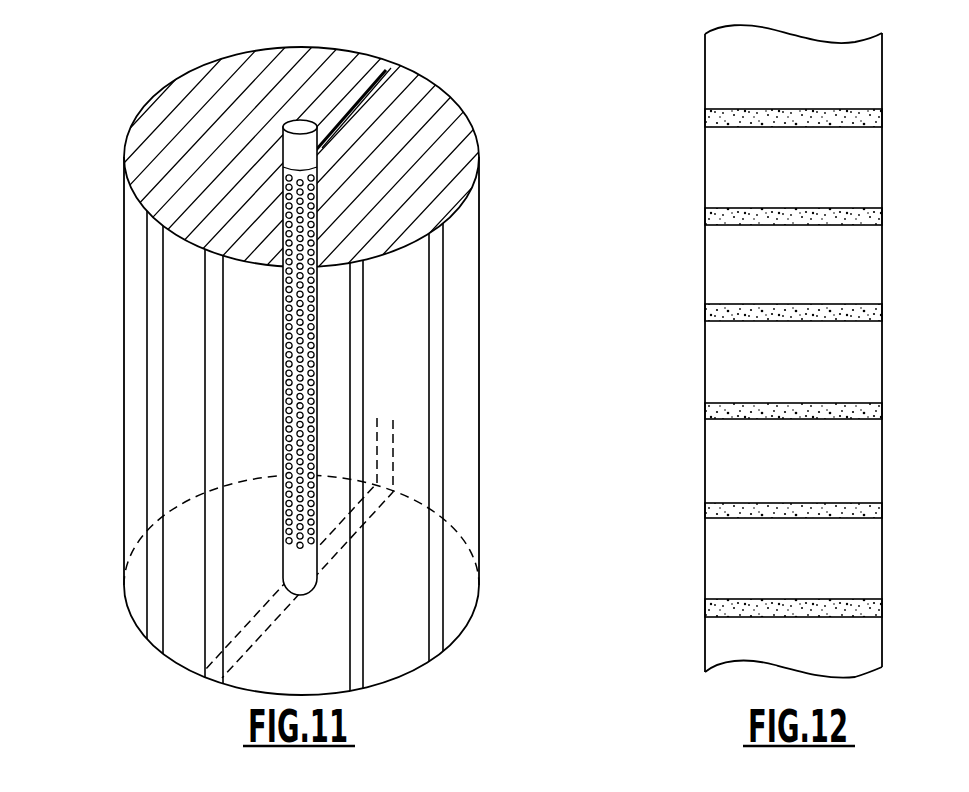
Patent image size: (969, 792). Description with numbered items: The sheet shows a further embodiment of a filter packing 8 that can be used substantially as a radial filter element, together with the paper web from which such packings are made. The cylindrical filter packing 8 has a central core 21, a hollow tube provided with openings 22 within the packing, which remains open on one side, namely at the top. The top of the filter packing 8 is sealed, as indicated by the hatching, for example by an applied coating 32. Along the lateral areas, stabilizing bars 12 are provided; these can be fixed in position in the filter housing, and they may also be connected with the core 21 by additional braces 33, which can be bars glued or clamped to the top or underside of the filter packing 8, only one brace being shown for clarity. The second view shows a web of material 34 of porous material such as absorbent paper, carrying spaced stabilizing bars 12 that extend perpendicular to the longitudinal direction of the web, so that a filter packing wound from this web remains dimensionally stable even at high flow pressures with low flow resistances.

In FIG. 11, the filter packing 8 is at (457, 342).
In FIG. 11, the stabilizing bars 12 is at (477, 380).
In FIG. 12, the stabilizing bars 12 is at (712, 213).
In FIG. 11, the central core 21 is at (282, 352).
In FIG. 11, the openings 22 is at (282, 457).
In FIG. 11, the applied coating 32 is at (443, 113).
In FIG. 11, the braces 33 is at (388, 68).
In FIG. 12, the web of material 34 is at (727, 452).